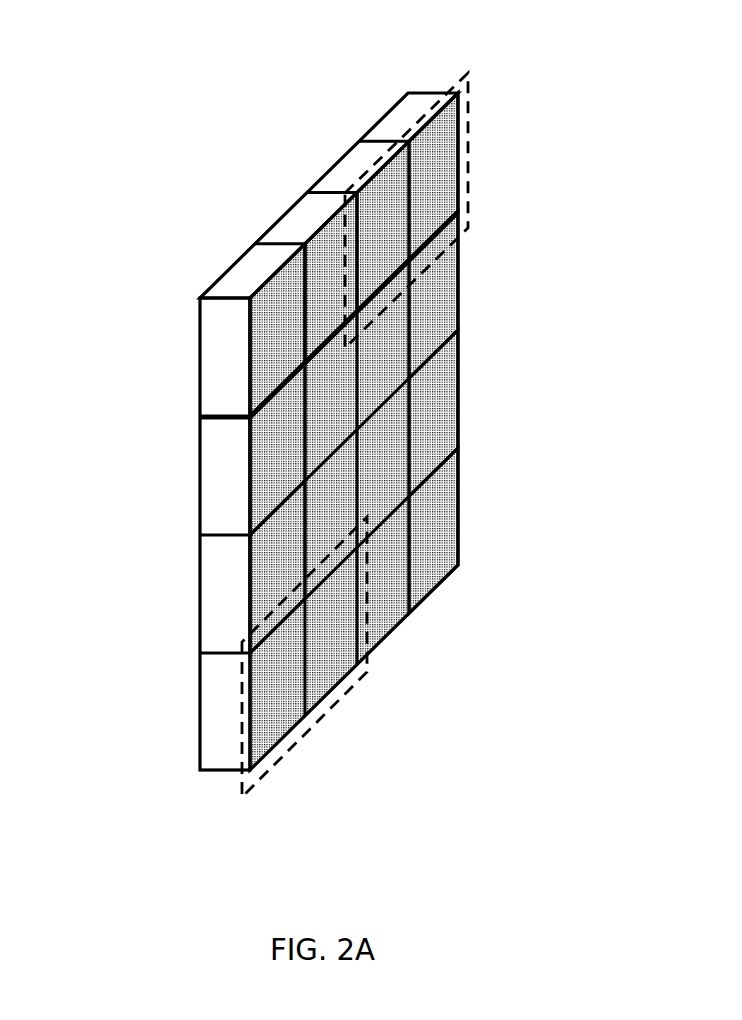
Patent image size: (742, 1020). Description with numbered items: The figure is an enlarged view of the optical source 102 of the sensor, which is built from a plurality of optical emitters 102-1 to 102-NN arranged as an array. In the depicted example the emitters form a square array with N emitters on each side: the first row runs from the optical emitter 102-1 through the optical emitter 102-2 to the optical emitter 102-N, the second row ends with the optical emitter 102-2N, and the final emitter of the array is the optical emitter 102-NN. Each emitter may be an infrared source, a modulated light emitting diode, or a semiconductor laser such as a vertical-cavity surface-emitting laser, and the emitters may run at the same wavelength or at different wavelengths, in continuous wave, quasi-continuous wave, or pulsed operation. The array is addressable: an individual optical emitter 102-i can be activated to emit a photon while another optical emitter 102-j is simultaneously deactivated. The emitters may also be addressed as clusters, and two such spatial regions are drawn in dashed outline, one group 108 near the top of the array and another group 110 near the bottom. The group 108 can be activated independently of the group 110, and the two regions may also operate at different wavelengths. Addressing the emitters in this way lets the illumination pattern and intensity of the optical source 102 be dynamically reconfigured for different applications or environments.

The optical source 102 is at (177, 172).
The optical emitter 102-1 is at (270, 317).
The optical emitter 102-2 is at (337, 280).
The optical emitter 102-N is at (420, 175).
The optical emitter 102-2N is at (438, 282).
The optical emitter 102-j is at (267, 580).
The optical emitter 102-i is at (437, 412).
The optical emitter 102-NN is at (437, 530).
The group of optical emitters 108 is at (467, 70).
The group of optical emitters 110 is at (315, 730).